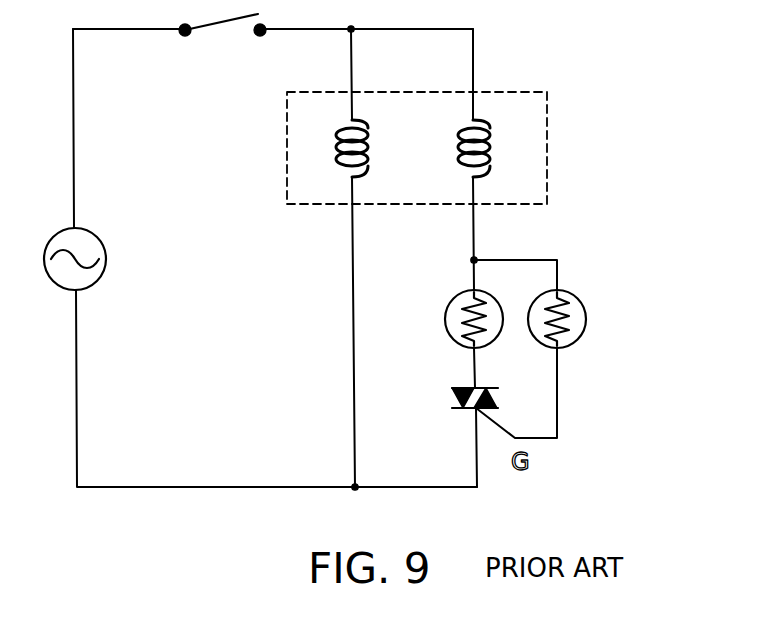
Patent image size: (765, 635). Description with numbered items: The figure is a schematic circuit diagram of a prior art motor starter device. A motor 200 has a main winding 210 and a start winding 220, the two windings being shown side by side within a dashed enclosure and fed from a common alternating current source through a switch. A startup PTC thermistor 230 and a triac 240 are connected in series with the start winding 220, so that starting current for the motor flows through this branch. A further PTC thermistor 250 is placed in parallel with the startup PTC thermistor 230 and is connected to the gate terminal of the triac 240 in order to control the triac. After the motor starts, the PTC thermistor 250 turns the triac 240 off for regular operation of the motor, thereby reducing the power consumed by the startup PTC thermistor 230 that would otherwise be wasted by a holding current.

The motor 200 is at (547, 120).
The main winding 210 is at (368, 130).
The start winding 220 is at (500, 157).
The startup PTC thermistor 230 is at (497, 292).
The triac 240 is at (507, 398).
The PTC thermistor 250 is at (587, 315).